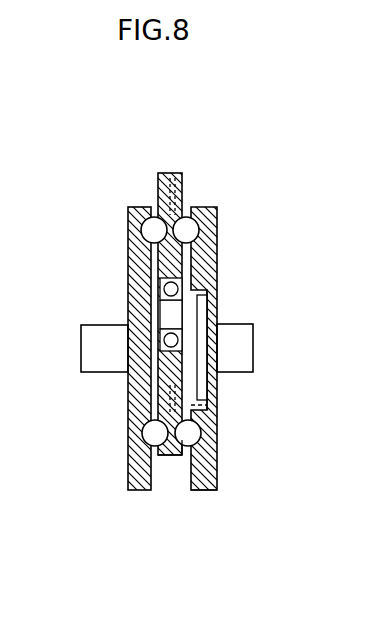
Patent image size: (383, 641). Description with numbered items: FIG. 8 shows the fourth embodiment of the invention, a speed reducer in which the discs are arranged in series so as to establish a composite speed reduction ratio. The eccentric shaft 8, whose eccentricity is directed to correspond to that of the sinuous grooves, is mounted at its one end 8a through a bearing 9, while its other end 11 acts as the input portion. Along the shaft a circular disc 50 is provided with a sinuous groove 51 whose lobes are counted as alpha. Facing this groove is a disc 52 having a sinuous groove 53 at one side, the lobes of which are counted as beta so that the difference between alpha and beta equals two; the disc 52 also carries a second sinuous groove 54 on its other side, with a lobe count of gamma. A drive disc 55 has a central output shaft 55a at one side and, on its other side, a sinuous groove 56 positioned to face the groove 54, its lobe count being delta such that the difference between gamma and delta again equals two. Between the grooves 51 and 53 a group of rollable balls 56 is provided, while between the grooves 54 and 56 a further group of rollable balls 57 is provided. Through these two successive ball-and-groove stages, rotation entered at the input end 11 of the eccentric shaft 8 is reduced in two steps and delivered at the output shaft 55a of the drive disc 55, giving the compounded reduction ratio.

The eccentric shaft 8 is at (229, 388).
The one end of the shaft 8a is at (205, 338).
The bearing 9 is at (207, 302).
The other end of the shaft 11 is at (245, 357).
The circular disc 50 is at (213, 490).
The sinuous groove 51 is at (182, 460).
The disc 52 is at (170, 458).
The sinuous groove 53 is at (220, 405).
The sinuous groove 54 is at (133, 397).
The drive disc 55 is at (128, 270).
The central output shaft 55a is at (88, 336).
The sinuous groove / rollable balls 56 is at (125, 476).
The rollable balls 57 is at (158, 432).